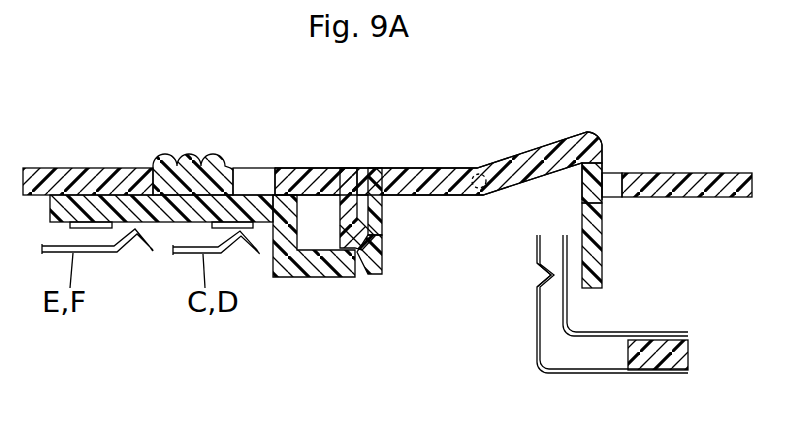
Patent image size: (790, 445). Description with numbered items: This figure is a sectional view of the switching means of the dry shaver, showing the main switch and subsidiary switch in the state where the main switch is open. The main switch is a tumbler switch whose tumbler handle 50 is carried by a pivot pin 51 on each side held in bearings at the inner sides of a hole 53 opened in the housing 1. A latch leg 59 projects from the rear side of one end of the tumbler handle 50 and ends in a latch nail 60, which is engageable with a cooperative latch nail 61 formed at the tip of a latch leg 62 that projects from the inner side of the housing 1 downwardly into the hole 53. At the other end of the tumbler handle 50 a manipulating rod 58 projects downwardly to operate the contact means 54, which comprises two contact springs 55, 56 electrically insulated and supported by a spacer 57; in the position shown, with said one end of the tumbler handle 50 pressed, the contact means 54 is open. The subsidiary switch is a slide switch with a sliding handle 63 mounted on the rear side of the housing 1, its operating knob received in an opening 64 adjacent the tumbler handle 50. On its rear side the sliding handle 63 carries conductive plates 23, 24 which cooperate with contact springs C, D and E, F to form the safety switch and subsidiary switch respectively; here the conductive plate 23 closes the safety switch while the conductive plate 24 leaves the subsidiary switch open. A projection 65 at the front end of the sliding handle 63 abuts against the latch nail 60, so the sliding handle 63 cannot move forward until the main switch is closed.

The housing 1 is at (710, 175).
The conductive plate 23 is at (247, 233).
The conductive plate 24 is at (92, 228).
The tumbler handle 50 is at (417, 168).
The pivot pin 51 is at (475, 197).
The hole 53 is at (614, 178).
The contact means 54 is at (548, 276).
The contact spring 55 is at (568, 320).
The contact spring 56 is at (537, 333).
The spacer 57 is at (667, 352).
The manipulating rod 58 is at (603, 258).
The latch leg 59 is at (383, 227).
The latch nail 60 is at (362, 255).
The latch nail 61 is at (373, 233).
The latch leg 62 is at (348, 213).
The sliding handle 63 is at (163, 160).
The opening 64 is at (258, 168).
The projection 65 is at (318, 270).